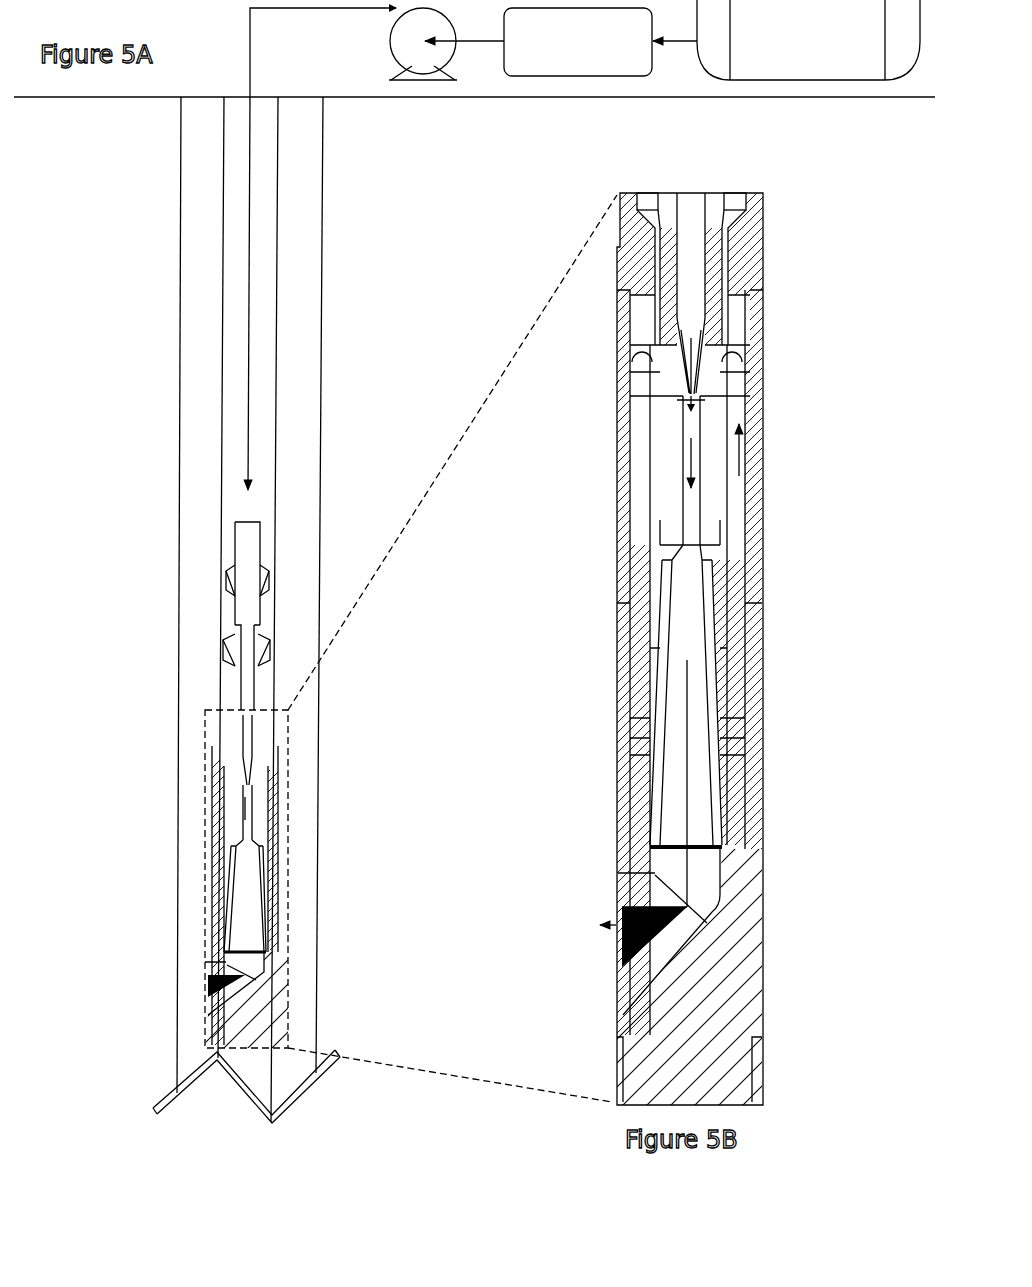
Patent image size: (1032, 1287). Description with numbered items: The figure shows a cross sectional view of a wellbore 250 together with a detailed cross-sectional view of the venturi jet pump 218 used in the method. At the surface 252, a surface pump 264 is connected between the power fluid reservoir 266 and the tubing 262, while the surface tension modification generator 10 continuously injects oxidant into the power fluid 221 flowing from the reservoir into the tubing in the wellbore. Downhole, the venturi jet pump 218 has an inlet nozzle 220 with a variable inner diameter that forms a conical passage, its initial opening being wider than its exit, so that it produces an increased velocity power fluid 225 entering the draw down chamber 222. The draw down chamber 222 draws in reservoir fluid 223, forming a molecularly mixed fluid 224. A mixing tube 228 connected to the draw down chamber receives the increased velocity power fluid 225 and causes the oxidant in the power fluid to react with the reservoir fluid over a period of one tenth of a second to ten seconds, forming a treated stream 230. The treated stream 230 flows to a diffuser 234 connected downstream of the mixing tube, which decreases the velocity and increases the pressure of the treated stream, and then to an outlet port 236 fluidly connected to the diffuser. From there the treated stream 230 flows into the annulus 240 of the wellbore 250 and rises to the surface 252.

In FIG. 5A, the surface 252 is at (91, 97).
In FIG. 5A, the wellbore 250 is at (322, 245).
In FIG. 5A, the tubing 262 is at (277, 340).
In FIG. 5A, the power fluid 221 is at (249, 439).
In FIG. 5A, the surface pump 264 is at (424, 80).
In FIG. 5A, the surface tension modification generator 10 is at (580, 76).
In FIG. 5A, the power fluid reservoir 266 is at (808, 80).
In FIG. 5A, the venturi jet pump 218 is at (230, 643).
In FIG. 5A, the annulus 240 is at (188, 858).
In FIG. 5B, the inlet nozzle 220 is at (747, 357).
In FIG. 5B, the draw down chamber 222 is at (677, 382).
In FIG. 5B, the increased velocity power fluid 225 is at (700, 397).
In FIG. 5B, the molecularly mixed fluid 224 is at (683, 460).
In FIG. 5B, the reservoir fluid 223 is at (740, 456).
In FIG. 5B, the mixing tube 228 is at (700, 494).
In FIG. 5B, the diffuser 234 is at (723, 704).
In FIG. 5B, the treated stream 230 is at (683, 770).
In FIG. 5B, the outlet port 236 is at (637, 893).